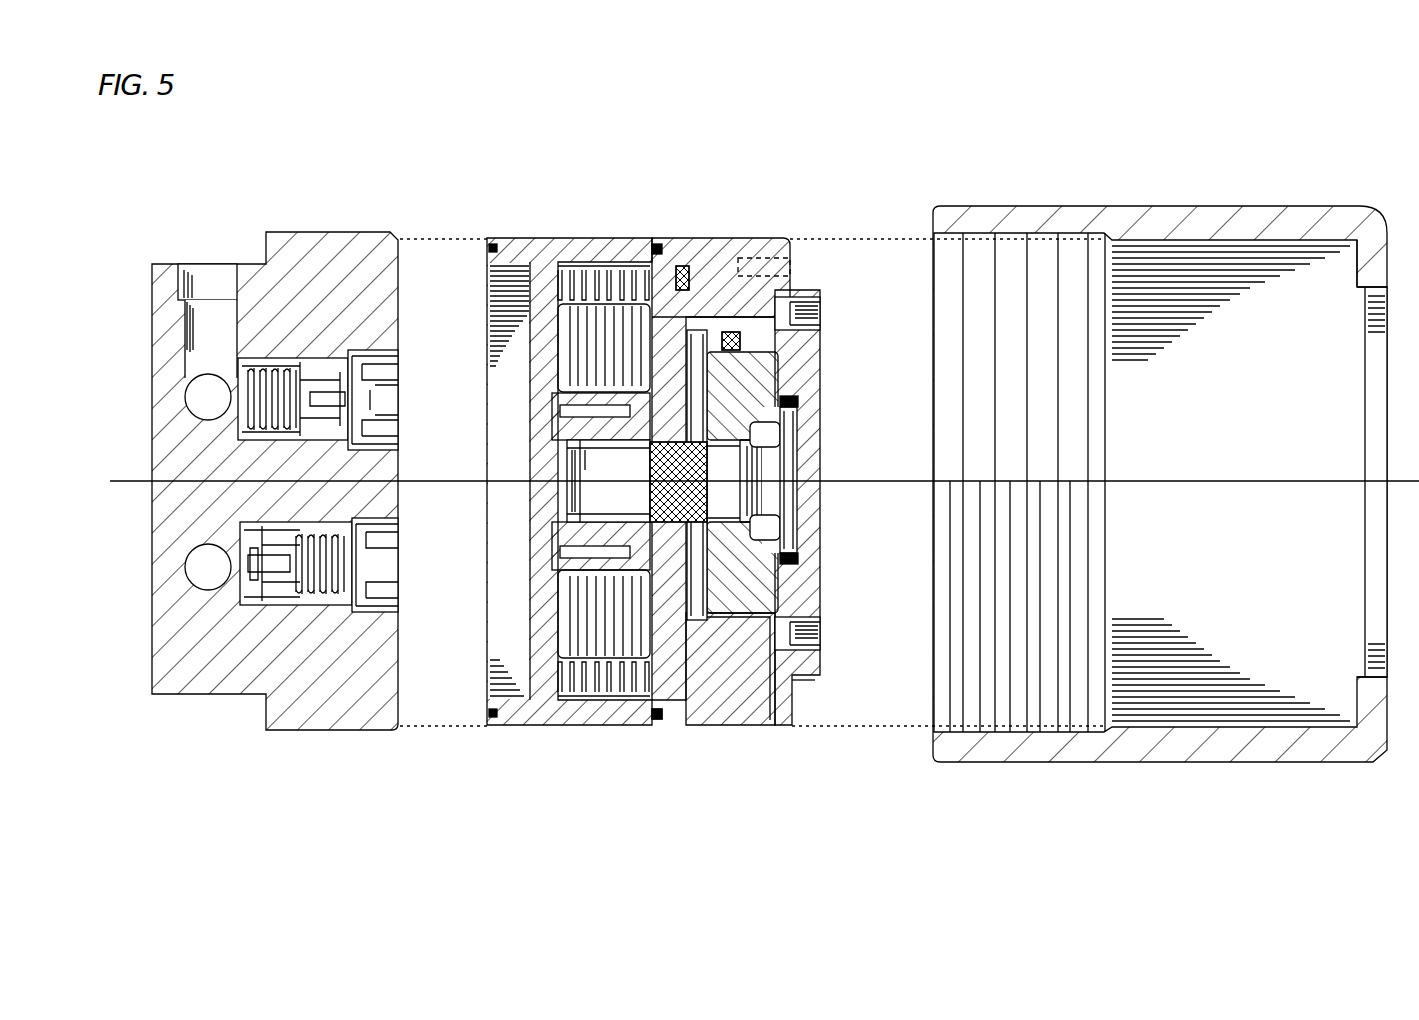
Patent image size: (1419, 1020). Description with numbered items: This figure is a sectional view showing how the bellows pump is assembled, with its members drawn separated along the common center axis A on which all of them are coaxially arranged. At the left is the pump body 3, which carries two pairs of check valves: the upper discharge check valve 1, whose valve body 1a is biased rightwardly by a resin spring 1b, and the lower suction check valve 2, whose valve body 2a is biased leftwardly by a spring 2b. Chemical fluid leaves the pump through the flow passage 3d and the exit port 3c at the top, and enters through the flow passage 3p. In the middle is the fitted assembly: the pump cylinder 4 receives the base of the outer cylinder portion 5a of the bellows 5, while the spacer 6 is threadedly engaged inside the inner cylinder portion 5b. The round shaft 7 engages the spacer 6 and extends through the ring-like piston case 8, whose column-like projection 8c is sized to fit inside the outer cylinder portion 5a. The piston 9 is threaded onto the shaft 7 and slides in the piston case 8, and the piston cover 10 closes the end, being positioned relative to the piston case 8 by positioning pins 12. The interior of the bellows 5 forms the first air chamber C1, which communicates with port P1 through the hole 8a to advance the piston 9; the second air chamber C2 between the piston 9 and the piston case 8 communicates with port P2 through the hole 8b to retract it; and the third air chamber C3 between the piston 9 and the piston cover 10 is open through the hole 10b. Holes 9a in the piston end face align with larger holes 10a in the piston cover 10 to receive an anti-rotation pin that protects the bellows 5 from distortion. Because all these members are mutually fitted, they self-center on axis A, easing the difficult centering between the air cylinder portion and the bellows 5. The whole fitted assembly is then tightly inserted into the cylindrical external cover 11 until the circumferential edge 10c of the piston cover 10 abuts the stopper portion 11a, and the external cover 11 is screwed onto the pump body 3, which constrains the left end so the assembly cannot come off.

The check valve 1 is at (335, 372).
The valve body 1a is at (395, 404).
The spring 1b is at (270, 370).
The check valve 2 is at (270, 592).
The valve body 2a is at (240, 575).
The spring 2b is at (330, 598).
The pump body 3 is at (152, 370).
The exit port 3c is at (190, 268).
The flow passage 3d is at (203, 397).
The flow passage 3p is at (196, 567).
The pump cylinder 4 is at (555, 238).
The bellows 5 is at (600, 266).
The outer cylinder portion 5a is at (661, 300).
The inner cylinder portion 5b is at (658, 378).
The spacer 6 is at (550, 488).
The shaft 7 is at (724, 472).
The piston case 8 is at (755, 702).
The hole 8a is at (716, 330).
The hole 8b is at (712, 660).
The projection 8c is at (660, 717).
The piston 9 is at (768, 600).
The hole 9a is at (798, 402).
The piston cover 10 is at (822, 347).
The hole 10a is at (782, 428).
The hole 10b is at (798, 470).
The circumferential edge 10c is at (795, 702).
The external cover 11 is at (1165, 206).
The stopper portion 11a is at (1390, 245).
The positioning pin 12 is at (778, 248).
The center axis A is at (135, 481).
The first air chamber C1 is at (655, 605).
The second air chamber C2 is at (658, 356).
The third air chamber C3 is at (798, 505).
The port P1 is at (822, 325).
The port P2 is at (822, 637).